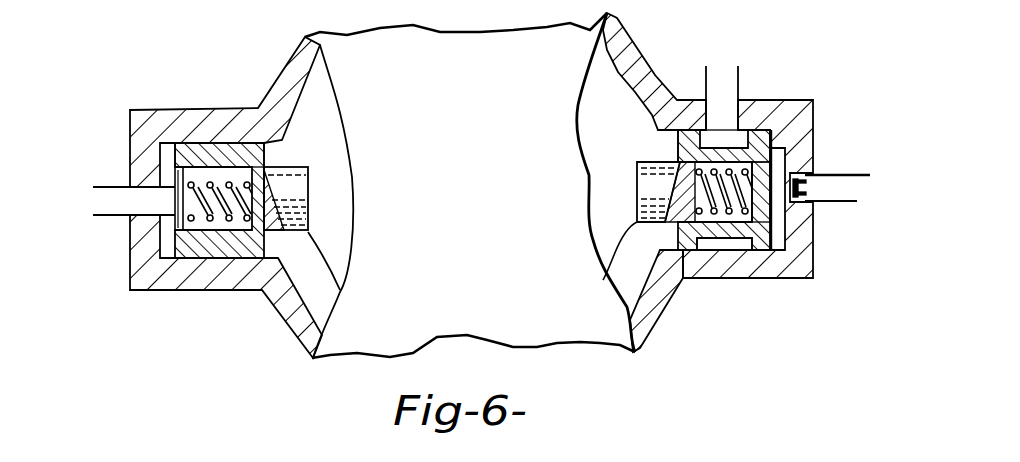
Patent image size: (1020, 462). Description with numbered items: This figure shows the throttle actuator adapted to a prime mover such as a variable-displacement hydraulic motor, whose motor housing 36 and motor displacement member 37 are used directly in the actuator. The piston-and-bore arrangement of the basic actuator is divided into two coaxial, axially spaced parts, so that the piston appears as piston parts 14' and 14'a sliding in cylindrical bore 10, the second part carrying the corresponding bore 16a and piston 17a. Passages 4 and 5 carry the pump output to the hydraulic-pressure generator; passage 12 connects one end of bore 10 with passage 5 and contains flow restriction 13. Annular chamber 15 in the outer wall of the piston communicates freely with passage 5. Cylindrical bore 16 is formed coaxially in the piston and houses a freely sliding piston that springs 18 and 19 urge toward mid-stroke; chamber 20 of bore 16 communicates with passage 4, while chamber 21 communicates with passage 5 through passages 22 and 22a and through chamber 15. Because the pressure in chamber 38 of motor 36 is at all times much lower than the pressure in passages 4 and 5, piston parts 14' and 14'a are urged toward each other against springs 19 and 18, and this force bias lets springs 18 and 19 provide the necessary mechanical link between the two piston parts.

The passage 4 is at (93, 207).
The passage 5 is at (726, 74).
The cylindrical bore 10 is at (277, 250).
The passage 12 is at (851, 195).
The flow restriction 13 is at (807, 188).
The piston part 14' is at (121, 183).
The piston part 14'a is at (821, 205).
The annular chamber 15 is at (736, 236).
The cylindrical bore 16 is at (206, 248).
The cup 16a is at (740, 164).
The wedge piece 17a is at (658, 158).
The spring 18 is at (215, 238).
The spring 19 is at (708, 242).
The chamber 20 is at (199, 173).
The chamber 21 is at (727, 236).
The passage 22 is at (733, 232).
The passage 22a is at (742, 132).
The motor housing 36 is at (613, 33).
The motor displacement member 37 is at (345, 211).
The chamber 38 is at (644, 288).